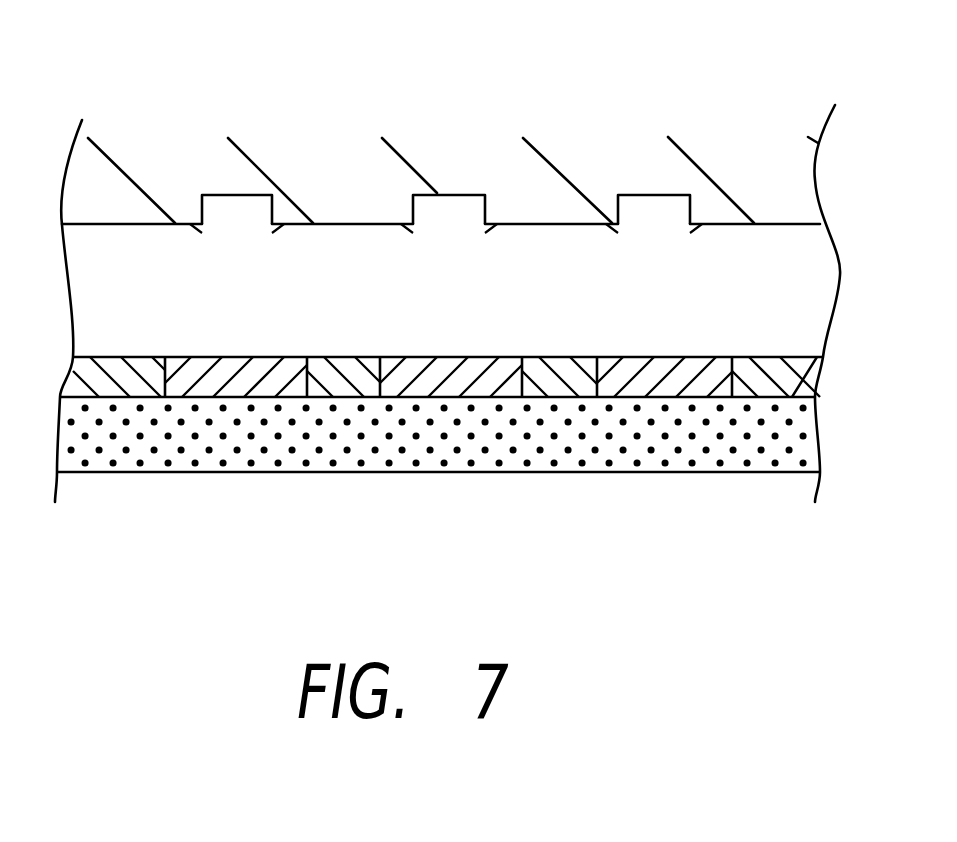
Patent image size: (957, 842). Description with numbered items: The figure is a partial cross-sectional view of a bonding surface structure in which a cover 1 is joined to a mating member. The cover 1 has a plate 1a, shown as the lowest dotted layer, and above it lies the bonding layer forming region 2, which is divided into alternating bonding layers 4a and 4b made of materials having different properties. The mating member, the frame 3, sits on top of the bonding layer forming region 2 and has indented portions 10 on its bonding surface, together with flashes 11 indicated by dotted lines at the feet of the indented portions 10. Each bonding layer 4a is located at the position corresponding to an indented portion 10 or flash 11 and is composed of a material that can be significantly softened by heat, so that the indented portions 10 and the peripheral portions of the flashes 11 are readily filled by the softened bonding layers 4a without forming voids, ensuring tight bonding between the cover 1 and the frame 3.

The cover 1 is at (546, 518).
The plate 1a is at (697, 462).
The bonding layer forming region 2 is at (443, 336).
The frame 3 is at (583, 147).
The bonding layer 4a is at (237, 372).
The bonding layer 4b is at (343, 372).
The indented portion 10 is at (228, 217).
The flash 11 is at (183, 260).